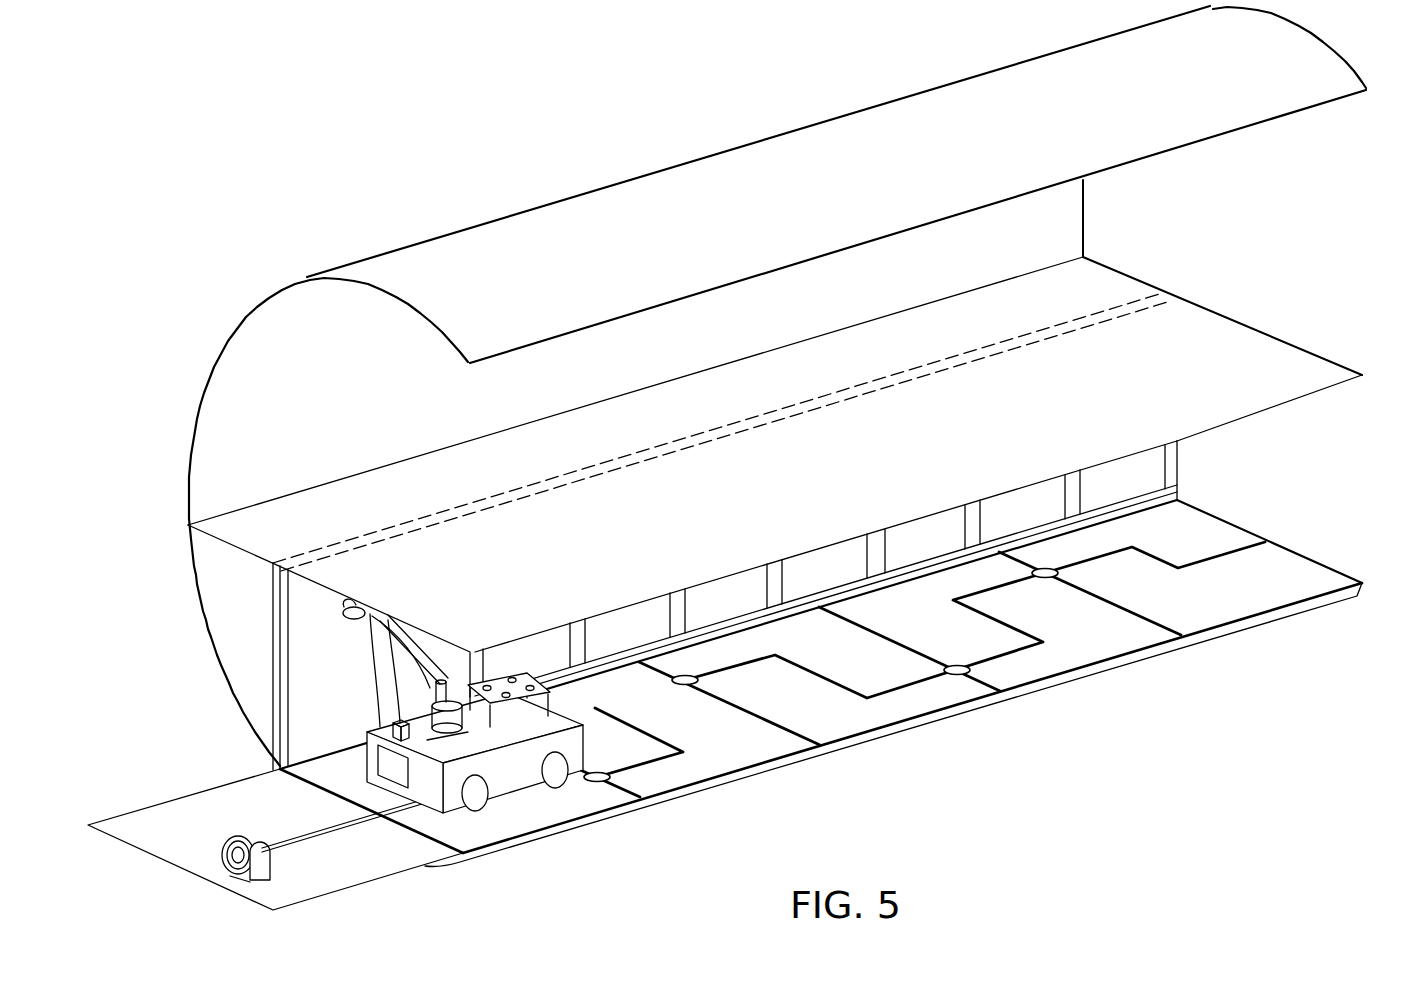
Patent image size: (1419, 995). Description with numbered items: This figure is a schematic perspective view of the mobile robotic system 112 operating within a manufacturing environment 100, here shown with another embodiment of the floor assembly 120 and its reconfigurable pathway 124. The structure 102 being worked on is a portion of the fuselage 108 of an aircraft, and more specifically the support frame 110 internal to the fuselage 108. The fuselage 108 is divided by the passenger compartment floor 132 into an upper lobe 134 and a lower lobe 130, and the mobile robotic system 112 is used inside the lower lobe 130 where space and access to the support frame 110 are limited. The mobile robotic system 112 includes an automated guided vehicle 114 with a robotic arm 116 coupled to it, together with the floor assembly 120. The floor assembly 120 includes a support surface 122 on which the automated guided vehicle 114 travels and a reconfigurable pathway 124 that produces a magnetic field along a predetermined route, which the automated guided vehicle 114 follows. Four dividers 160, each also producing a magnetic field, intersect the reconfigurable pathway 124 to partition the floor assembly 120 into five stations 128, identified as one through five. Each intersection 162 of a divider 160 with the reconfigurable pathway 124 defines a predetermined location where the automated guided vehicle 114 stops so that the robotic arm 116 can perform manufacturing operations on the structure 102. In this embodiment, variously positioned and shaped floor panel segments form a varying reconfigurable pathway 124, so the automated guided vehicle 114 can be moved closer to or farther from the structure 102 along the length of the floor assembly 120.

The manufacturing environment 100 is at (642, 440).
The structure 102 is at (836, 184).
The fuselage 108 is at (300, 278).
The support frame 110 is at (290, 675).
The mobile robotic system 112 is at (275, 780).
The automated guided vehicle 114 is at (586, 736).
The robotic arm 116 is at (452, 655).
The floor assembly 120 is at (1232, 522).
The support surface 122 is at (947, 583).
The reconfigurable pathway 124 is at (900, 690).
The stations 128 is at (528, 842).
The lower lobe 130 is at (1294, 413).
The passenger compartment floor 132 is at (1258, 332).
The upper lobe 134 is at (1174, 207).
The dividers 160 is at (650, 665).
The intersection 162 is at (1047, 571).